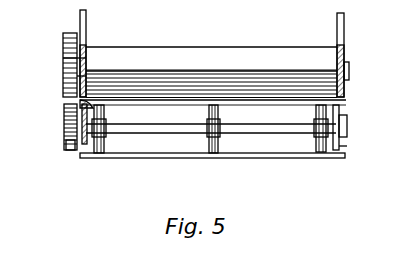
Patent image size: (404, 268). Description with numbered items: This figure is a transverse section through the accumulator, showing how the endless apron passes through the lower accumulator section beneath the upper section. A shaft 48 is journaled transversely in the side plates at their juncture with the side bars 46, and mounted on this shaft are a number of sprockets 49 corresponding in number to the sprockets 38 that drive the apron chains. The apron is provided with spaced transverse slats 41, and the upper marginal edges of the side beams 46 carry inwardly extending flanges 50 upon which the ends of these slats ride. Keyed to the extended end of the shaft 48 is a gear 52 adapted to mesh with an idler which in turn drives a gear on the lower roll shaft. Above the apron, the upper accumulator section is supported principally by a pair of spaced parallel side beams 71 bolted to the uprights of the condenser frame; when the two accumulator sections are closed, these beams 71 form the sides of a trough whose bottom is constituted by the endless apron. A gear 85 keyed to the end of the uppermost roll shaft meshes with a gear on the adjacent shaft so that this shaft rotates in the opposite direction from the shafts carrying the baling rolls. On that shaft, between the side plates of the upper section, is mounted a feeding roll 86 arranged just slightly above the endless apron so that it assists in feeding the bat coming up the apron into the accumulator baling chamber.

The side beams 71 is at (86, 46).
The gear 85 is at (63, 58).
The feeding roll 86 is at (244, 54).
The inwardly extending flanges 50 is at (64, 122).
The gear 52 is at (70, 150).
The sprockets 38 is at (96, 148).
The sprockets 49 is at (100, 140).
The shaft 48 is at (173, 126).
The transverse slats 41 is at (299, 158).
The side bars 46 is at (347, 146).